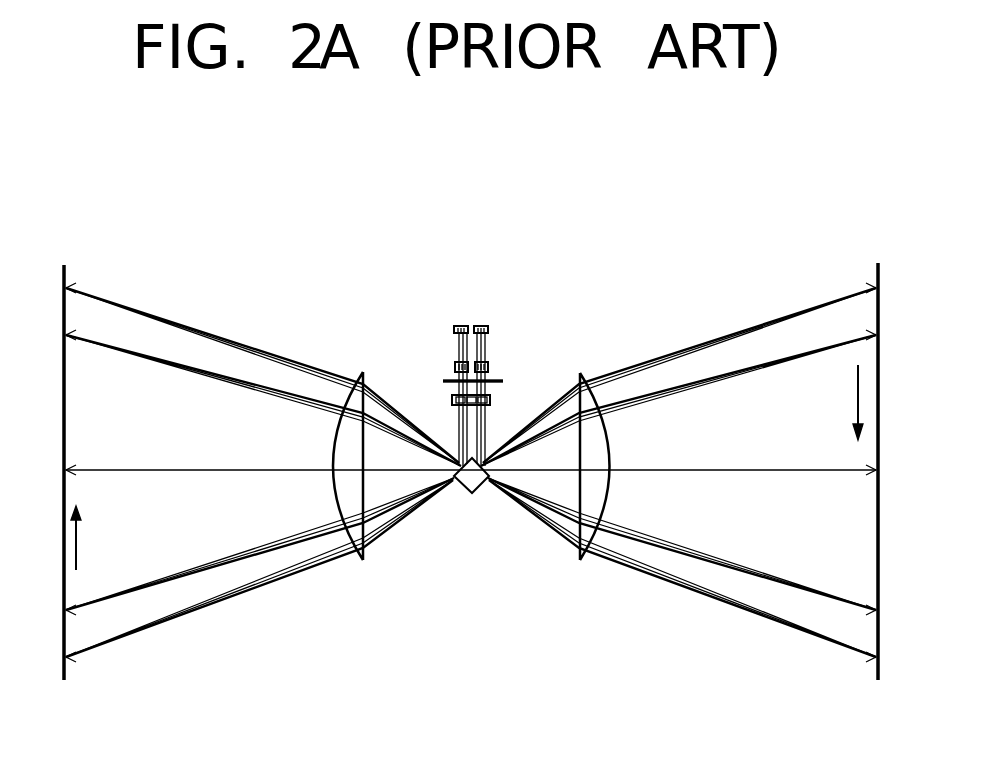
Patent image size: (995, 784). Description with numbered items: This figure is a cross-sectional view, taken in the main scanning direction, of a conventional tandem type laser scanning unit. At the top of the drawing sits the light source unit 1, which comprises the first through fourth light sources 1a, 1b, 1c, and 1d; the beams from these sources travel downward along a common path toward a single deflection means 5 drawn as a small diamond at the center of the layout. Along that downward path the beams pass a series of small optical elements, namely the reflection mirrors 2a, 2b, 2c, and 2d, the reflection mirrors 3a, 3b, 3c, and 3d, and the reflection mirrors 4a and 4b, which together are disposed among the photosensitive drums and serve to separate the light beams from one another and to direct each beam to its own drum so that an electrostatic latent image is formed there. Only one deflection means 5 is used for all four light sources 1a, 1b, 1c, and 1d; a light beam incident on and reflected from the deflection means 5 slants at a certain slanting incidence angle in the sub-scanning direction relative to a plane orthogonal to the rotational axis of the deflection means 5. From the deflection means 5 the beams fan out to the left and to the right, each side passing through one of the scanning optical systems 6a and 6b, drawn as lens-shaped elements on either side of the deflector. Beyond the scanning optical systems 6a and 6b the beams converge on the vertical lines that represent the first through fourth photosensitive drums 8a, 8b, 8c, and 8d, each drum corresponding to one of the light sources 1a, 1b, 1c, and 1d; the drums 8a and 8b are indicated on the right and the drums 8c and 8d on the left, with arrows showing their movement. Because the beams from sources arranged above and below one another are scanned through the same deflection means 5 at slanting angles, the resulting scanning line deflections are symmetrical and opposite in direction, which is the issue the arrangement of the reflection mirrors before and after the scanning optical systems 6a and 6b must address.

The light sources 1 is at (530, 270).
The first light source 1a is at (481, 326).
The second light source 1b is at (508, 303).
The third light source 1c is at (462, 326).
The fourth light source 1d is at (453, 303).
The reflection mirror 2a is at (485, 362).
The reflection mirror 2b is at (528, 343).
The reflection mirror 2c is at (458, 362).
The reflection mirror 2d is at (437, 343).
The reflection mirror 3a is at (503, 380).
The reflection mirror 3b is at (518, 361).
The reflection mirror 3c is at (443, 380).
The reflection mirror 3d is at (444, 361).
The reflection mirror 4a is at (490, 400).
The reflection mirror 4b is at (452, 400).
The deflection means 5 is at (472, 494).
The scanning optical system 6a is at (580, 560).
The scanning optical system 6b is at (363, 560).
The first photosensitive drum 8a is at (877, 287).
The second photosensitive drum 8b is at (852, 456).
The third photosensitive drum 8c is at (66, 281).
The fourth photosensitive drum 8d is at (101, 448).